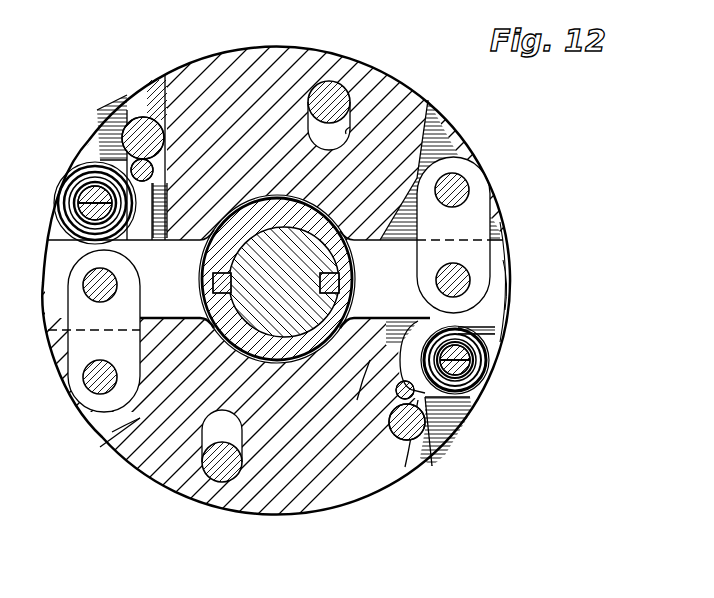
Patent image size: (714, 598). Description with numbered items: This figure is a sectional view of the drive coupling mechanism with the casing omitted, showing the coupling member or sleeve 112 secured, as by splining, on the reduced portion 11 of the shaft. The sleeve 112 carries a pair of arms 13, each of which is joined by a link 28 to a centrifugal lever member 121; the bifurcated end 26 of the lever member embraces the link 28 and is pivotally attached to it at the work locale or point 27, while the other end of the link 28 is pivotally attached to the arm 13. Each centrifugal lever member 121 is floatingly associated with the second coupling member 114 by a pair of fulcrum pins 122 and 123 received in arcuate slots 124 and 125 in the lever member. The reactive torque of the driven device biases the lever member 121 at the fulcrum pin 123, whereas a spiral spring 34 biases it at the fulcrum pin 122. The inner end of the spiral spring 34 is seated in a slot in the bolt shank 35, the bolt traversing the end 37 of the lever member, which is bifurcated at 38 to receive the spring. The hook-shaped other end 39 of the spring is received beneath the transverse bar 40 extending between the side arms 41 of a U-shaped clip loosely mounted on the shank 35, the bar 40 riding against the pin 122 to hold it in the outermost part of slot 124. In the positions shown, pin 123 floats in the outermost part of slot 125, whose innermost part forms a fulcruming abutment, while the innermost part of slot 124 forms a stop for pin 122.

The reduced portion 11 is at (230, 334).
The arm 13 is at (191, 290).
The bifurcated end 26 is at (75, 354).
The work locale or point 27 is at (457, 192).
The link 28 is at (485, 252).
The spiral spring 34 is at (74, 180).
The shank 35 is at (94, 167).
The end of the centrifugal weight member 37 is at (507, 355).
The bifurcation 38 is at (87, 212).
The other end of the spiral spring 39 is at (359, 402).
The transverse bar 40 is at (489, 418).
The side arms 41 is at (140, 230).
The coupling member or sleeve 112 is at (114, 434).
The second coupling member 114 is at (510, 285).
The centrifugal lever member 121 is at (220, 60).
The fulcrum pin 122 is at (152, 117).
The fulcrum pin 123 is at (340, 99).
The arcuate slot 124 is at (135, 160).
The arcuate slot 125 is at (352, 130).